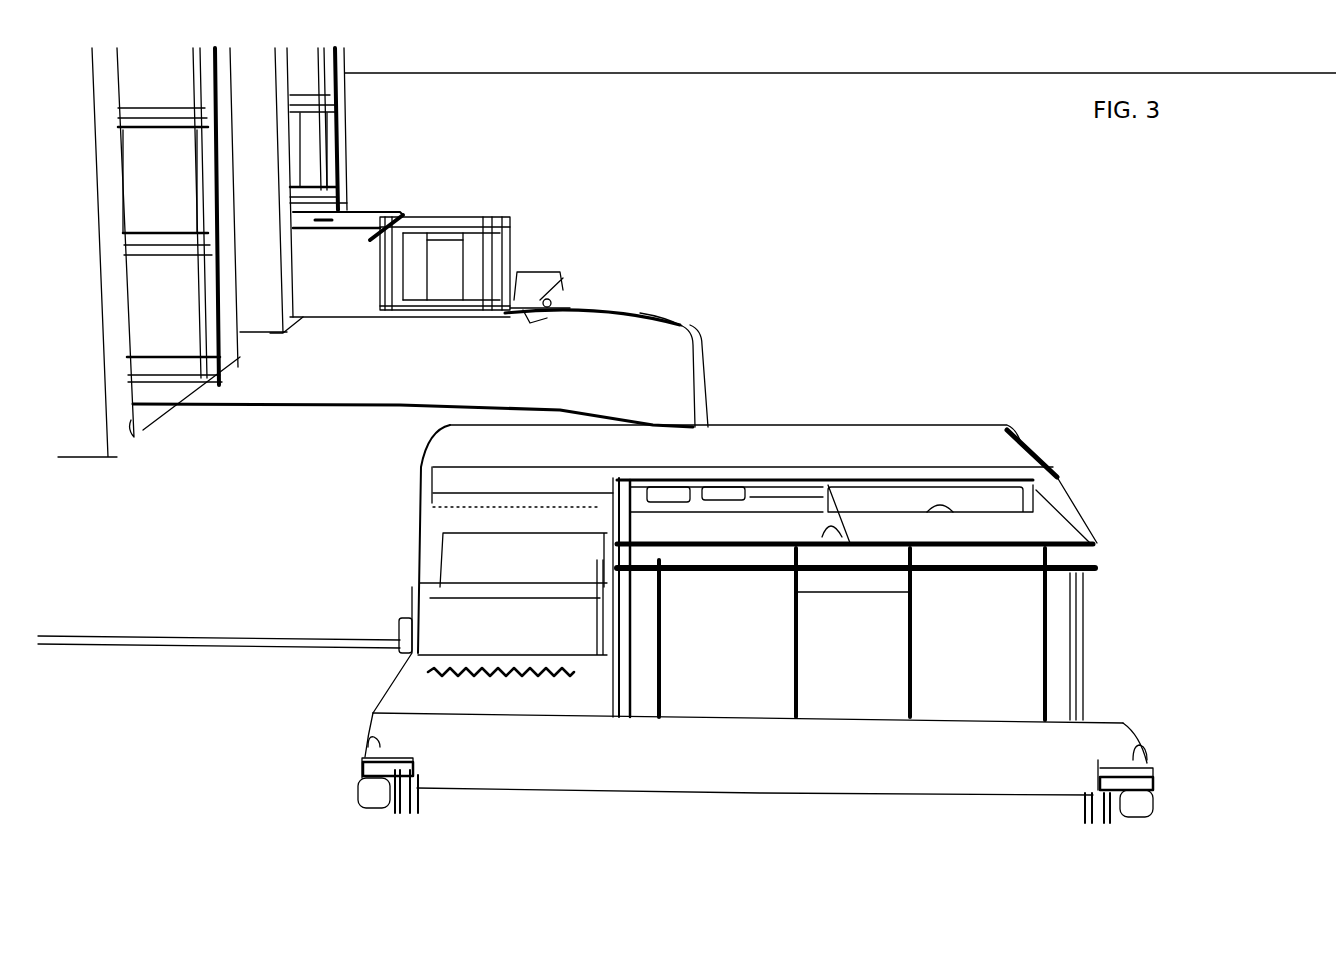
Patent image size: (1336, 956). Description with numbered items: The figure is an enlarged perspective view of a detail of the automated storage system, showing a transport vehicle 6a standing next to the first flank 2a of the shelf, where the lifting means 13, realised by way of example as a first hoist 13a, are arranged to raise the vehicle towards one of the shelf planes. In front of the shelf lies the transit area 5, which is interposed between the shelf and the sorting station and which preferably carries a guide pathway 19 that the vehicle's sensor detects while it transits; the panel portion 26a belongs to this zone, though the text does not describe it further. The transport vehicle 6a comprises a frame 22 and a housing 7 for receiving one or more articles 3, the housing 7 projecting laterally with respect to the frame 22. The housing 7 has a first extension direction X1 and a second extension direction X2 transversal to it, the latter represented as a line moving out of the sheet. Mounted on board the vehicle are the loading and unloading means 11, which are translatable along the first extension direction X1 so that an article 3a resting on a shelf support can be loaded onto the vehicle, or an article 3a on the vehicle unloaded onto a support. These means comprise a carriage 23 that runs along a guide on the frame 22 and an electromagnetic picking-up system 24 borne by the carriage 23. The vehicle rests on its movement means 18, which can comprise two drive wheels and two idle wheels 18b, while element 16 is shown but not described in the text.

The first flank 2a is at (380, 119).
The lifting means 13 is at (373, 170).
The first hoist 13a is at (347, 192).
The guide pathway 19 is at (663, 312).
The transit area 5 is at (727, 322).
The panel edge 26a is at (317, 325).
The loading and unloading means 11 is at (382, 558).
The carriage 23 is at (410, 593).
The electromagnetic picking-up system 24 is at (398, 633).
The housing 7 is at (430, 687).
The frame 22 is at (973, 440).
The articles 3 is at (883, 478).
The article 3a is at (783, 490).
The transport vehicle 6a is at (1023, 447).
The post 16 is at (1064, 631).
The movement means 18 is at (1170, 748).
The idle wheels 18b is at (388, 797).
The first extension direction X1 is at (1133, 503).
The second extension direction X2 is at (1063, 450).